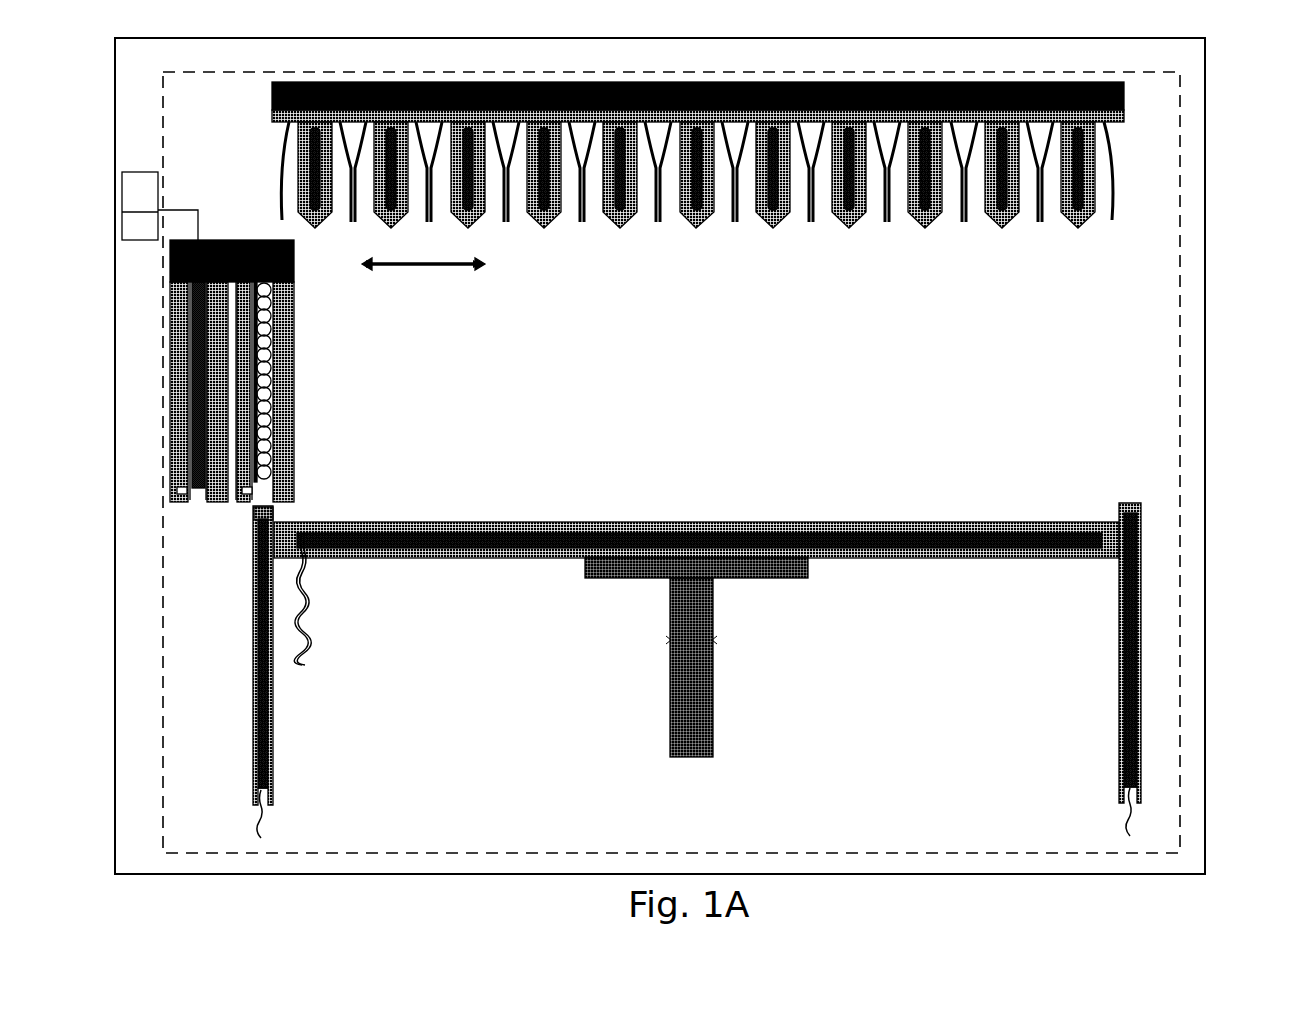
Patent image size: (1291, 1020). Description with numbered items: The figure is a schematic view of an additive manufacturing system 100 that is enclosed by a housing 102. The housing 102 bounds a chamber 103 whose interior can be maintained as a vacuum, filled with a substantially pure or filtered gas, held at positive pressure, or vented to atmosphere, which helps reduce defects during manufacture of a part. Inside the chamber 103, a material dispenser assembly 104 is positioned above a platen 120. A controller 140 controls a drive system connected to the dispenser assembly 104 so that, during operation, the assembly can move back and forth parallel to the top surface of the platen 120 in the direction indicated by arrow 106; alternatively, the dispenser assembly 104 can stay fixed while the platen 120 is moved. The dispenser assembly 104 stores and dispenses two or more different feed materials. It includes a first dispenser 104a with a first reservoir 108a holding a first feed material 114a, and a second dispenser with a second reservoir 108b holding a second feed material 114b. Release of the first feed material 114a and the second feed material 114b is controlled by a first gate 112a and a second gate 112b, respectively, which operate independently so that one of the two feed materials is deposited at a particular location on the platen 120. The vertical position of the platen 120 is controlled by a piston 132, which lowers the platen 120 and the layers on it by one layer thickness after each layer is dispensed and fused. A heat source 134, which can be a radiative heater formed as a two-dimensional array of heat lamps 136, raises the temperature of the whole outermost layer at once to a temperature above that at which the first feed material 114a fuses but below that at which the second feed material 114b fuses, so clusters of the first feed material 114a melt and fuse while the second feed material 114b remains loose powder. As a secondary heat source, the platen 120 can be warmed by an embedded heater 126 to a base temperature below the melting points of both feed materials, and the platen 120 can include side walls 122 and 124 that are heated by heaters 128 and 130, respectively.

The additive manufacturing system 100 is at (815, 26).
The housing 102 is at (1205, 325).
The chamber 103 is at (1180, 278).
The material dispenser assembly 104 is at (257, 422).
The first dispenser 104a is at (191, 443).
The arrow 106 is at (455, 268).
The first reservoir 108a is at (230, 395).
The second reservoir 108b is at (285, 450).
The first gate 112a is at (200, 484).
The second gate 112b is at (275, 497).
The first feed material 114a is at (197, 493).
The second feed material 114b is at (275, 360).
The platen 120 is at (696, 600).
The side wall 122 is at (253, 638).
The side wall 124 is at (1118, 660).
The embedded heater 126 is at (918, 560).
The heater 128 is at (273, 735).
The heater 130 is at (1118, 740).
The piston 132 is at (668, 640).
The heat source 134 is at (272, 95).
The heat lamps 136 is at (760, 212).
The controller 140 is at (160, 206).